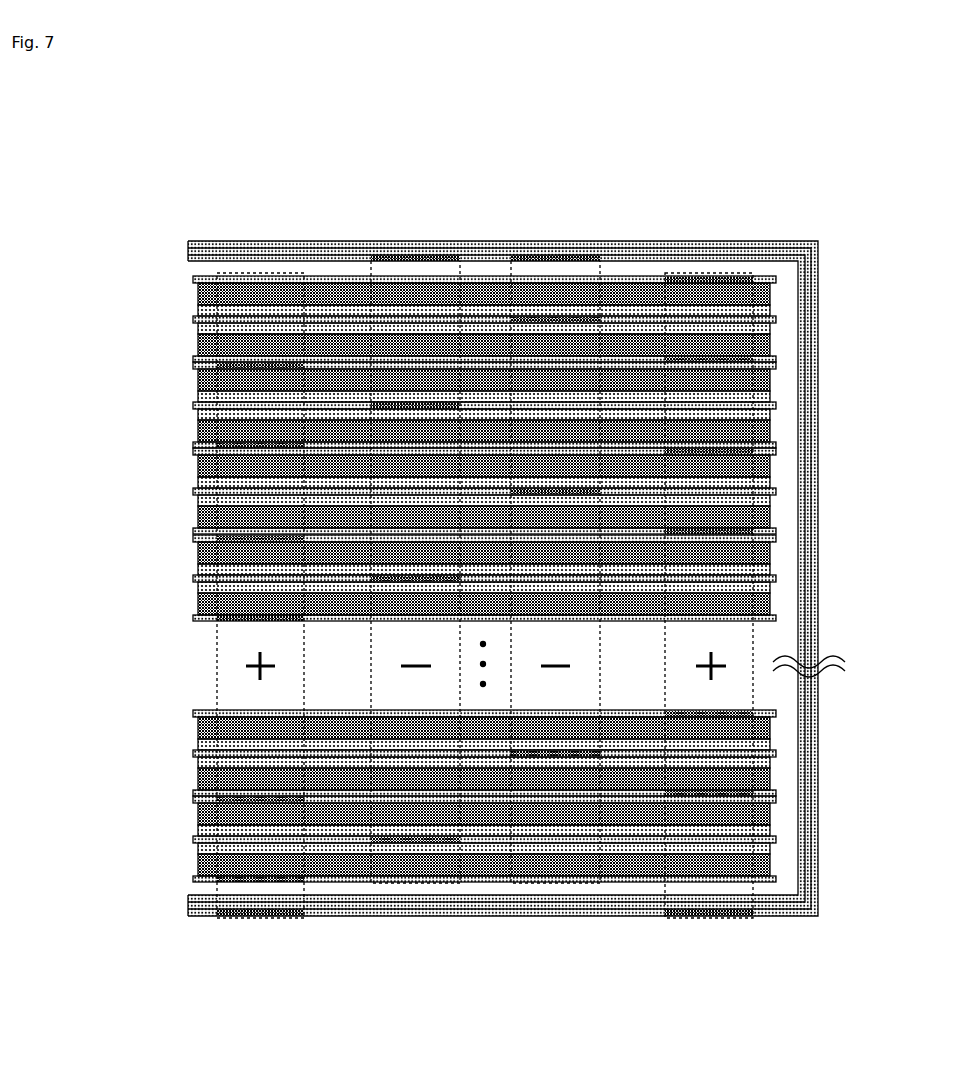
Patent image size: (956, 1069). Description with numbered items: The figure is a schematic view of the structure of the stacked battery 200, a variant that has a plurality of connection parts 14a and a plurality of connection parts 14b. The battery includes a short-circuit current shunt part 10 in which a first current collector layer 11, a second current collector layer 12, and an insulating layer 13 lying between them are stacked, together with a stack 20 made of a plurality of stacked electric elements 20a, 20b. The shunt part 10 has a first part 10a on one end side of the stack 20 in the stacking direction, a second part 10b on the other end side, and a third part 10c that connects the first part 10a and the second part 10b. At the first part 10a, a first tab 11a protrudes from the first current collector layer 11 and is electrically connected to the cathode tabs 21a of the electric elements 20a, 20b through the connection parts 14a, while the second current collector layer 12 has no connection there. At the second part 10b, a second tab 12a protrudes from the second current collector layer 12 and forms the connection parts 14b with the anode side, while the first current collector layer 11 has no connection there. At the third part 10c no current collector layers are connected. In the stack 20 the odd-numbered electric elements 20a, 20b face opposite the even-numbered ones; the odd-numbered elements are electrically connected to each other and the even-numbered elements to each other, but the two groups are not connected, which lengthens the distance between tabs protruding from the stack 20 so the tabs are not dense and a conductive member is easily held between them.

The stacked battery 200 is at (463, 137).
The short-circuit current shunt part 10 is at (108, 245).
The first part 10a is at (515, 920).
The second part 10b is at (515, 212).
The third part 10c is at (817, 507).
The first current collector layer 11 is at (180, 237).
The first tab 11a is at (252, 912).
The second current collector layer 12 is at (180, 251).
The second tab 12a is at (411, 247).
The insulating layer 13 is at (180, 244).
The electric connection part 14a is at (302, 883).
The electric connection part 14b is at (457, 262).
The stack 20 is at (66, 277).
The electric element 20a is at (183, 291).
The electric element 20b is at (183, 327).
The cathode tab 21a is at (700, 266).